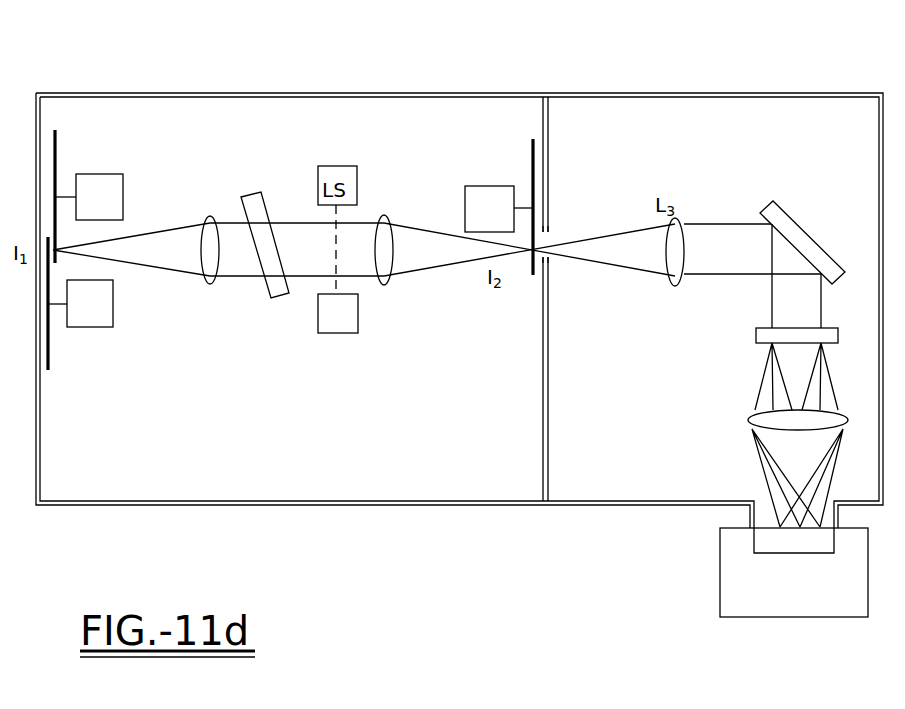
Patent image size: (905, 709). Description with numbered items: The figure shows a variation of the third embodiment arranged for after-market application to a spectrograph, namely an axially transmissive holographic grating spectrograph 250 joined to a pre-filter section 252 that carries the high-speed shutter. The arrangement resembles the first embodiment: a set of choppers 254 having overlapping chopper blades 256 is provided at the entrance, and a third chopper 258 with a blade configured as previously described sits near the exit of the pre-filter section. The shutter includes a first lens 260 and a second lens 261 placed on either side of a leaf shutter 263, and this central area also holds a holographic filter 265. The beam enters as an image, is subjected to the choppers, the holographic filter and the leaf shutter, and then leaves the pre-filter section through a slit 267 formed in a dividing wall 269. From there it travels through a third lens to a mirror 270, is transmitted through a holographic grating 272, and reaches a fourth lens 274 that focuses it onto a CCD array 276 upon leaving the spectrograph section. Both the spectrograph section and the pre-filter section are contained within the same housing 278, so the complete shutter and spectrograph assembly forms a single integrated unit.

The axially transmissive holographic grating spectrograph 250 is at (727, 90).
The pre-filter section 252 is at (403, 90).
The choppers 254 is at (103, 174).
The chopper blades 256 is at (57, 142).
The third chopper 258 is at (528, 147).
The first lens 260 is at (212, 284).
The second lens 261 is at (385, 286).
The leaf shutter 263 is at (348, 334).
The holographic filter 265 is at (270, 298).
The slit 267 is at (548, 256).
The dividing wall 269 is at (548, 168).
The mirror 270 is at (800, 232).
The holographic grating 272 is at (756, 335).
The fourth lens 274 is at (750, 411).
The CCD array 276 is at (752, 526).
The housing 278 is at (620, 503).